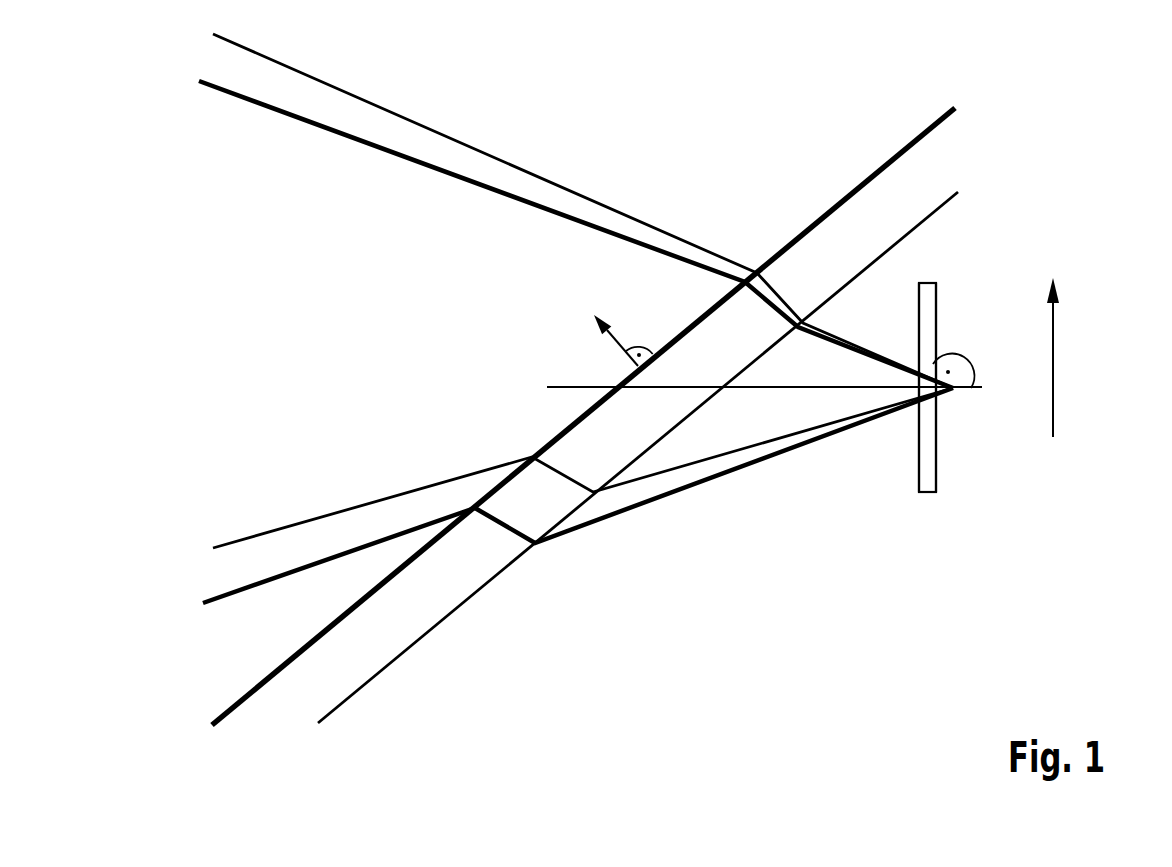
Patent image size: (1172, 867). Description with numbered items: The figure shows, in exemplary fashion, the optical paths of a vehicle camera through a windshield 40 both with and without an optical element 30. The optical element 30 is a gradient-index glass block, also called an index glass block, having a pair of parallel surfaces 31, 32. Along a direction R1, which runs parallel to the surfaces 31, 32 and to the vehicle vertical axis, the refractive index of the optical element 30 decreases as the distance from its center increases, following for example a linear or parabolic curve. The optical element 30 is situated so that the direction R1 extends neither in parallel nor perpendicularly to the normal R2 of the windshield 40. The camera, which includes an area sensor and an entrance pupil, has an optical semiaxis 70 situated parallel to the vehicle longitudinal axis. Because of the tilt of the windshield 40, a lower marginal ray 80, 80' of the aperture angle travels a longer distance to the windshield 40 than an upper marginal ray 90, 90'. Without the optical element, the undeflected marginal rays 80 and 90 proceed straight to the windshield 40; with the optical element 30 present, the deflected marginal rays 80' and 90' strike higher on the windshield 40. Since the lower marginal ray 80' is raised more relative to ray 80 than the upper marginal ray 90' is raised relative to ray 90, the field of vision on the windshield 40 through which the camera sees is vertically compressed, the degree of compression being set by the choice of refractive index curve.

The optical element 30 is at (928, 283).
The parallel surface 31 is at (936, 320).
The parallel surface 32 is at (919, 320).
The windshield 40 is at (857, 188).
The optical semiaxis 70 is at (565, 386).
The lower marginal ray 80 is at (578, 523).
The lower marginal ray 80' is at (583, 468).
The upper marginal ray 90 is at (576, 234).
The upper marginal ray 90' is at (583, 211).
The direction R1 is at (1053, 365).
The normal of the windshield R2 is at (618, 342).